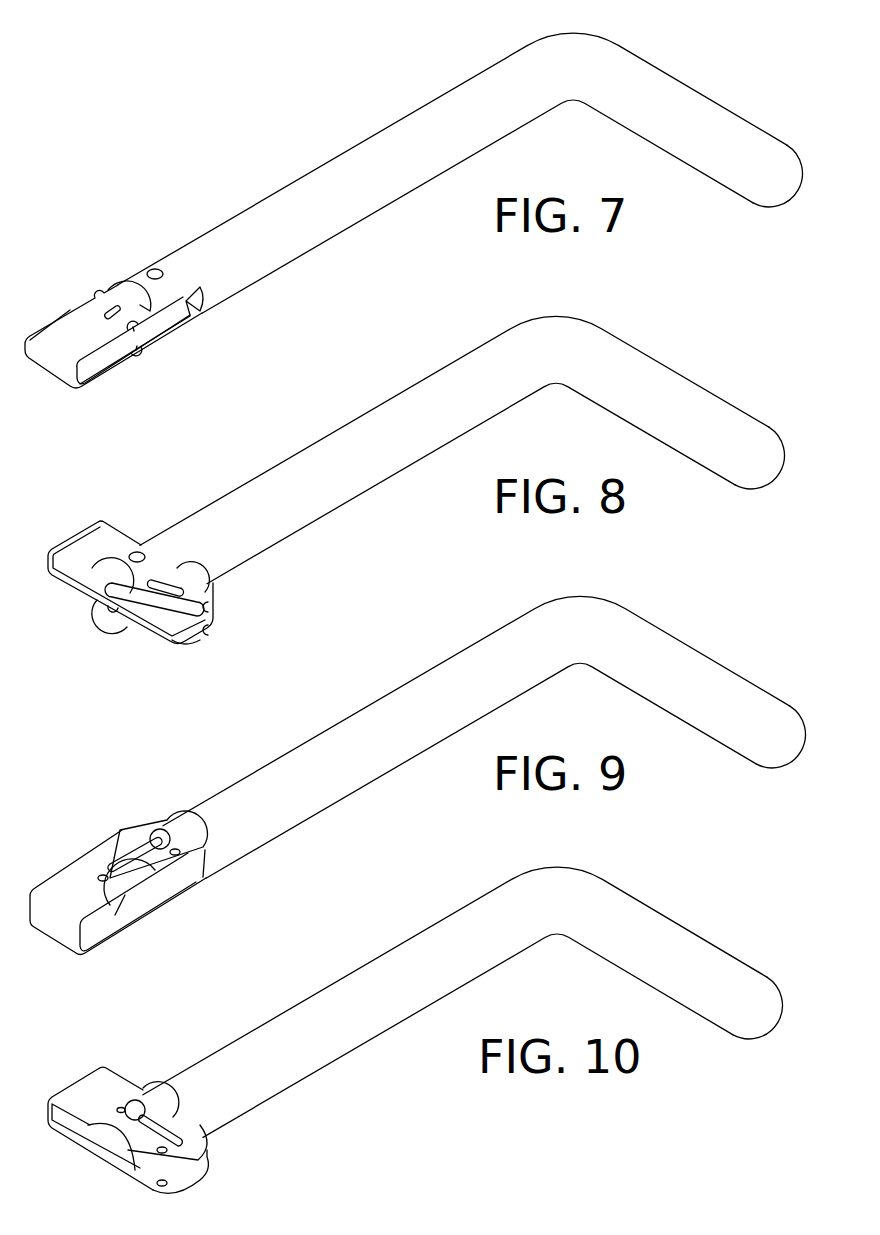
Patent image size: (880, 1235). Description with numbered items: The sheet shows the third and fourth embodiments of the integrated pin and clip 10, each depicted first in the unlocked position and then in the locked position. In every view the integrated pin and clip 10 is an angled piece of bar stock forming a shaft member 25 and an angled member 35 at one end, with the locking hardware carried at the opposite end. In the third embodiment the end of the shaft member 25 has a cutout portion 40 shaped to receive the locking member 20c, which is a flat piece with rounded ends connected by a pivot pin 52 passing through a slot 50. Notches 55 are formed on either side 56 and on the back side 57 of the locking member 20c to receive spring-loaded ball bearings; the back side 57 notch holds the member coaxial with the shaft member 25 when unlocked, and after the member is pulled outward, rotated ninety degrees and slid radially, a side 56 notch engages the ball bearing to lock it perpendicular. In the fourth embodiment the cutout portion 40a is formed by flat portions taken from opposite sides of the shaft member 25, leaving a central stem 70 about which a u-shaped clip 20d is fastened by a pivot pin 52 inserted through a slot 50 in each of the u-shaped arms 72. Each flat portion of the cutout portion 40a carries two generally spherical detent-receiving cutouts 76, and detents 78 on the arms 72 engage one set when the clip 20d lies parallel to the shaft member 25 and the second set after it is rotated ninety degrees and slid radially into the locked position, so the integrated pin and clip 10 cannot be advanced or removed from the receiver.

In FIG. 7, the integrated pin and clip 10 is at (696, 70).
In FIG. 8, the integrated pin and clip 10 is at (677, 354).
In FIG. 9, the integrated pin and clip 10 is at (700, 636).
In FIG. 10, the integrated pin and clip 10 is at (680, 911).
In FIG. 7, the shaft member 25 is at (346, 226).
In FIG. 8, the shaft member 25 is at (333, 512).
In FIG. 9, the shaft member 25 is at (350, 794).
In FIG. 10, the shaft member 25 is at (335, 1060).
In FIG. 7, the angled member 35 is at (708, 167).
In FIG. 8, the angled member 35 is at (686, 451).
In FIG. 9, the angled member 35 is at (712, 737).
In FIG. 10, the angled member 35 is at (690, 1008).
In FIG. 7, the locking member (third embodiment) 20c is at (78, 388).
In FIG. 8, the locking member (third embodiment) 20c is at (78, 543).
In FIG. 9, the u-shaped clip 20d is at (55, 932).
In FIG. 10, the u-shaped clip 20d is at (77, 1088).
In FIG. 7, the cutout portion 40 is at (192, 303).
In FIG. 8, the cutout portion 40 is at (93, 603).
In FIG. 9, the cutout portion 40a is at (200, 854).
In FIG. 7, the slot 50 is at (113, 303).
In FIG. 8, the slot 50 is at (172, 580).
In FIG. 9, the slot 50 is at (118, 858).
In FIG. 10, the slot 50 is at (193, 1125).
In FIG. 7, the pivot pin 52 is at (157, 268).
In FIG. 8, the pivot pin 52 is at (137, 551).
In FIG. 9, the pivot pin 52 is at (154, 832).
In FIG. 10, the pivot pin 52 is at (138, 1102).
In FIG. 7, the notches 55 is at (150, 350).
In FIG. 8, the notches 55 is at (210, 607).
In FIG. 7, the side 56 is at (70, 310).
In FIG. 8, the side 56 is at (66, 590).
In FIG. 7, the back side 57 is at (196, 318).
In FIG. 8, the back side 57 is at (176, 643).
In FIG. 9, the central stem 70 is at (152, 898).
In FIG. 10, the central stem 70 is at (112, 1160).
In FIG. 10, the u-shaped arms 72 is at (212, 1153).
In FIG. 10, the detent-receiving cutouts 76 is at (152, 1118).
In FIG. 9, the detents 78 is at (98, 874).